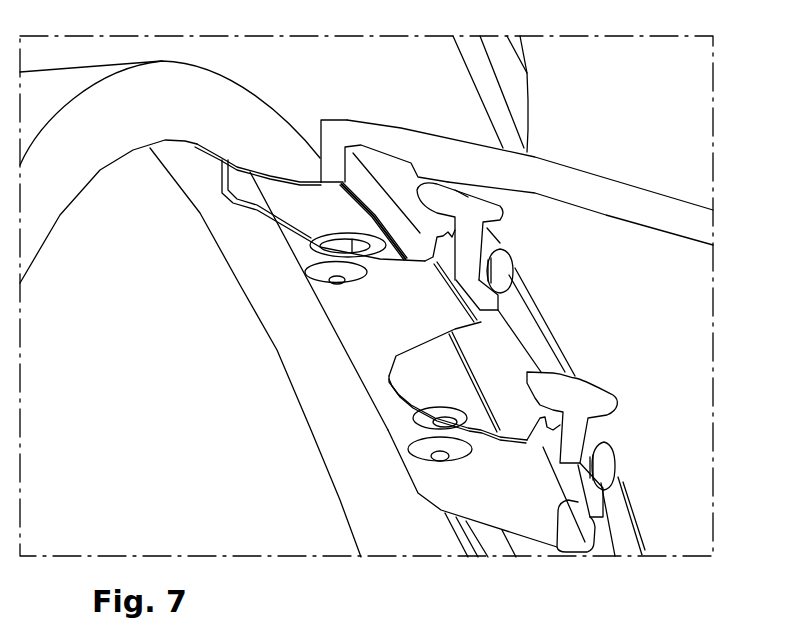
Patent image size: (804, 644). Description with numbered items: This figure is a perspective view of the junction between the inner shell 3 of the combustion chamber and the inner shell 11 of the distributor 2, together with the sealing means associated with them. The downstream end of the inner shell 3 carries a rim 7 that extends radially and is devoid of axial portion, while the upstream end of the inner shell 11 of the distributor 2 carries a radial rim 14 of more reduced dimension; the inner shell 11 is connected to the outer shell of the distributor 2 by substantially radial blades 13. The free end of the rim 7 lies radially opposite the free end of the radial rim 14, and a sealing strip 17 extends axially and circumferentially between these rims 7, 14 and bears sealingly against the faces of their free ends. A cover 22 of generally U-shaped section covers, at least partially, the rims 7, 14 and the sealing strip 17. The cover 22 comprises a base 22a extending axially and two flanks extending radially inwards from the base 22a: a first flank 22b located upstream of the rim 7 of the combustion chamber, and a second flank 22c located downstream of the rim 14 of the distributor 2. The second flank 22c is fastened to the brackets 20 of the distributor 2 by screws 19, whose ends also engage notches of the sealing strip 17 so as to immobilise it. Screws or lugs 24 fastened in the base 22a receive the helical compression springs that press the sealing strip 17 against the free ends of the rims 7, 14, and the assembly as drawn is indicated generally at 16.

The distributor 2 is at (385, 321).
The inner shell 3 is at (255, 373).
The rim 7 is at (170, 172).
The inner shell 11 is at (551, 182).
The blades 13 is at (603, 94).
The radial rim 14 is at (384, 147).
The rail 16 is at (523, 419).
The sealing strip 17 is at (321, 185).
The screws 19 is at (587, 369).
The brackets 20 is at (559, 530).
The cover 22 is at (391, 555).
The base 22a is at (430, 388).
The first flank 22b is at (276, 262).
The second flank 22c is at (515, 272).
The lugs 24 is at (374, 451).